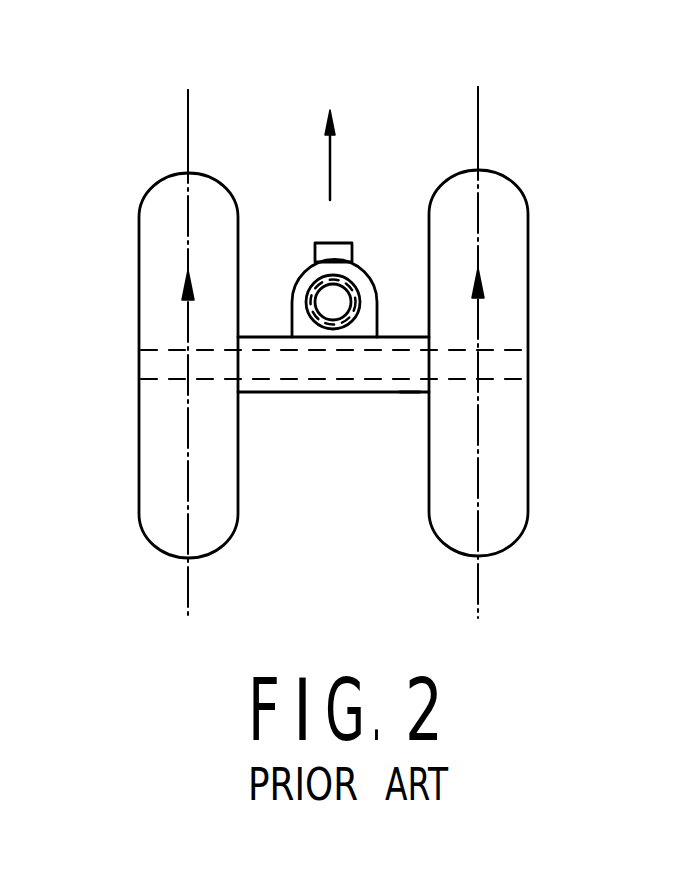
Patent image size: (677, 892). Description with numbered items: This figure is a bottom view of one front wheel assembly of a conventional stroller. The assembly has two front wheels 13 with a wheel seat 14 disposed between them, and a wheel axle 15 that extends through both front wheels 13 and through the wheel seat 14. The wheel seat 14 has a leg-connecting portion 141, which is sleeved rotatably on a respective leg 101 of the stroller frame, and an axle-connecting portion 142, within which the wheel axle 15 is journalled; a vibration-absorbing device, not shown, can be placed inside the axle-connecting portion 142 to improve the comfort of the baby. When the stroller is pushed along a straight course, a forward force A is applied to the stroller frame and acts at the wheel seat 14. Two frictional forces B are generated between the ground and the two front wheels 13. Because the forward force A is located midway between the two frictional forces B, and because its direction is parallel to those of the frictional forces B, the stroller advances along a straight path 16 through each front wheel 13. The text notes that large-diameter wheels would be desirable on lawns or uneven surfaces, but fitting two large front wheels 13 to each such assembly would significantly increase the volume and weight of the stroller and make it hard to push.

The front wheel 13 is at (170, 245).
The wheel seat 14 is at (283, 397).
The wheel axle 15 is at (500, 378).
The straight path 16 is at (188, 140).
The leg 101 is at (352, 330).
The leg-connecting portion 141 is at (367, 281).
The axle-connecting portion 142 is at (403, 392).
The forward force A is at (349, 143).
The frictional force B is at (190, 418).